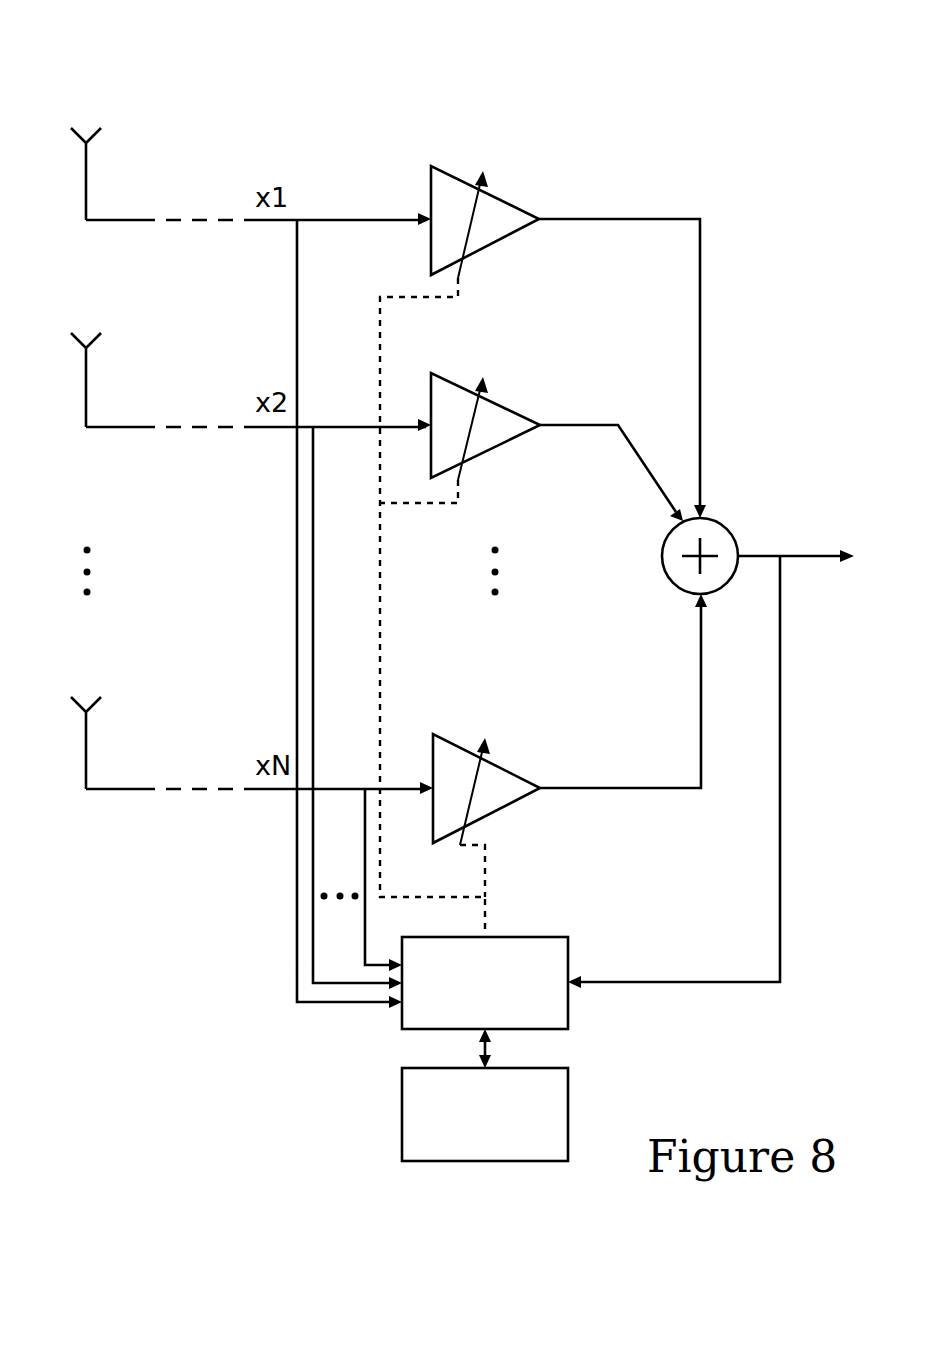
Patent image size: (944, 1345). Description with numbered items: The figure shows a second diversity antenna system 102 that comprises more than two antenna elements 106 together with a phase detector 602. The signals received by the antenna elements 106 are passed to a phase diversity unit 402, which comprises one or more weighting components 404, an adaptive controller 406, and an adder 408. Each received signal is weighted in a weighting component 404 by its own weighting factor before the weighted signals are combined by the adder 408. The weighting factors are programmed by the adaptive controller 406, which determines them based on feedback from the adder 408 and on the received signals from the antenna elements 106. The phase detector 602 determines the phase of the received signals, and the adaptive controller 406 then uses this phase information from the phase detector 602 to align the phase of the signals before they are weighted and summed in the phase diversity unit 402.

The diversity antenna system 102 is at (84, 80).
The antenna elements 106 is at (88, 173).
The phase diversity unit 402 is at (265, 118).
The weighting components 404 is at (515, 202).
The adaptive controller 406 is at (534, 937).
The adder 408 is at (729, 529).
The phase detector 602 is at (552, 1163).